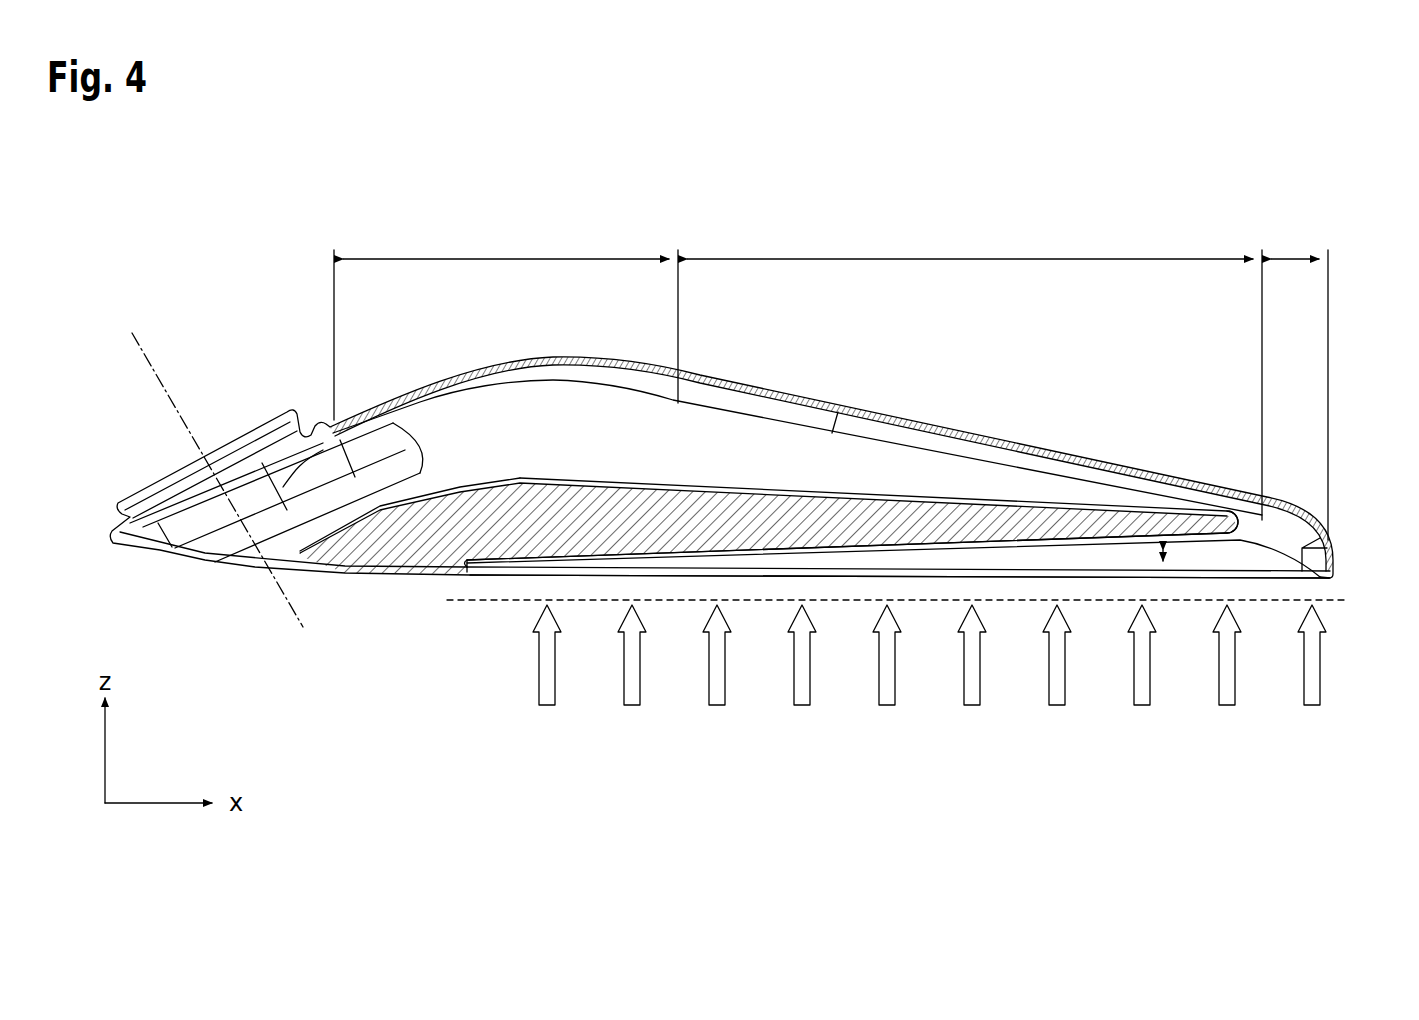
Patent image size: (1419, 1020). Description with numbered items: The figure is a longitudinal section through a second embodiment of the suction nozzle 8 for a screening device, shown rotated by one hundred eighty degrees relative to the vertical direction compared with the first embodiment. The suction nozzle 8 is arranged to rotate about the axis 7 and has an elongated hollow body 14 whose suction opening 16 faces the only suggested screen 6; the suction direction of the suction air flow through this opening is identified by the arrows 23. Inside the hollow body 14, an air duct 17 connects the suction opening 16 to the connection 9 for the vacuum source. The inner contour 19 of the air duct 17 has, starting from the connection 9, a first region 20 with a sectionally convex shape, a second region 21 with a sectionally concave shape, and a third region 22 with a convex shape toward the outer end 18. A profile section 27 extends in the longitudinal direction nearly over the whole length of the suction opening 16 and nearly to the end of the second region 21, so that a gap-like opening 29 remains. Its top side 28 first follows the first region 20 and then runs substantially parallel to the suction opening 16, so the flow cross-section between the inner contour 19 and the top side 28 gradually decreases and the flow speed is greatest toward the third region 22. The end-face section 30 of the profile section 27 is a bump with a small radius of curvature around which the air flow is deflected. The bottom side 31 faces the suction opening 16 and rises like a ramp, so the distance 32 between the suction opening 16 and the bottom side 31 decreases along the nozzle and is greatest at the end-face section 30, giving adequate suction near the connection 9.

The screen 6 is at (485, 600).
The axis 7 is at (133, 340).
The suction nozzle 8 is at (246, 266).
The connection 9 is at (236, 458).
The hollow body 14 is at (555, 357).
The suction opening 16 is at (1259, 590).
The air duct 17 is at (560, 446).
The outer end 18 is at (1335, 557).
The inner contour 19 is at (898, 446).
The first region 20 is at (508, 259).
The second region 21 is at (972, 259).
The third region 22 is at (1296, 259).
The arrows 23 is at (547, 705).
The profile section 27 is at (1020, 558).
The top side 28 is at (807, 492).
The gap-like opening 29 is at (1227, 503).
The end-face section 30 is at (1320, 578).
The bottom side 31 is at (1090, 547).
The distance 32 is at (1173, 557).